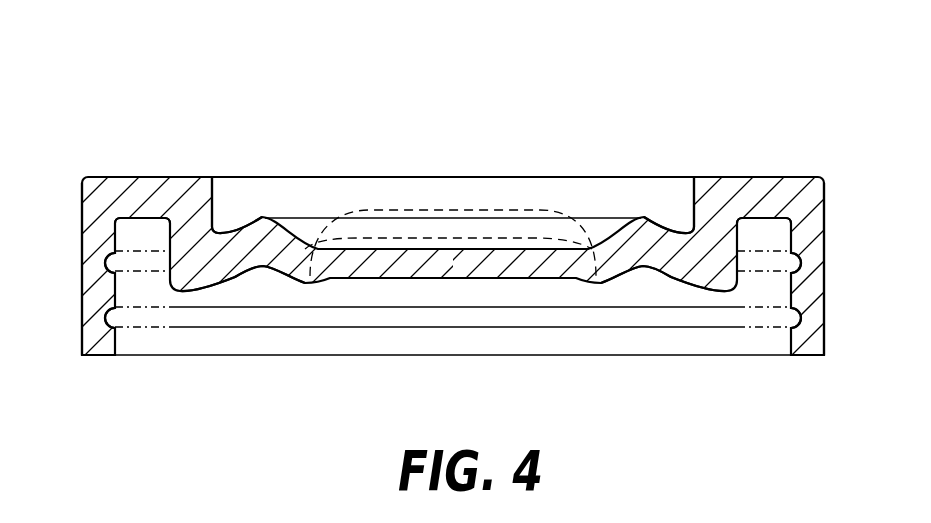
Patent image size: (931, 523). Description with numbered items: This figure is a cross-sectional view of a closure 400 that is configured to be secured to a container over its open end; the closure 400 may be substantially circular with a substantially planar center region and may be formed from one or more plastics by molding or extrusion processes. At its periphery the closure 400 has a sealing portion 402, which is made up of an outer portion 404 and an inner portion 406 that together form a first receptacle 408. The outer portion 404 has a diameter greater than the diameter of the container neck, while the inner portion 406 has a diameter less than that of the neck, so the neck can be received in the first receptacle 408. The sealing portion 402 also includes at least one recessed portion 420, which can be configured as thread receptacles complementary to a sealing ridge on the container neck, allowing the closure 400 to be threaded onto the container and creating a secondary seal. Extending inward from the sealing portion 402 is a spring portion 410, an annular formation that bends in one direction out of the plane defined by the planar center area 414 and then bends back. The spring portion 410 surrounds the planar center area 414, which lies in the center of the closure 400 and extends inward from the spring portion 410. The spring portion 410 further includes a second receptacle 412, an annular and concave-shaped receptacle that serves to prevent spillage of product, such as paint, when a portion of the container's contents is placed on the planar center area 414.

The closure 400 is at (800, 78).
The sealing portion 402 is at (123, 178).
The outer portion 404 is at (82, 203).
The inner portion 406 is at (216, 190).
The first receptacle 408 is at (143, 238).
The spring portion 410 is at (263, 228).
The second receptacle 412 is at (263, 268).
The planar center area 414 is at (373, 279).
The recessed portion 420 is at (109, 307).